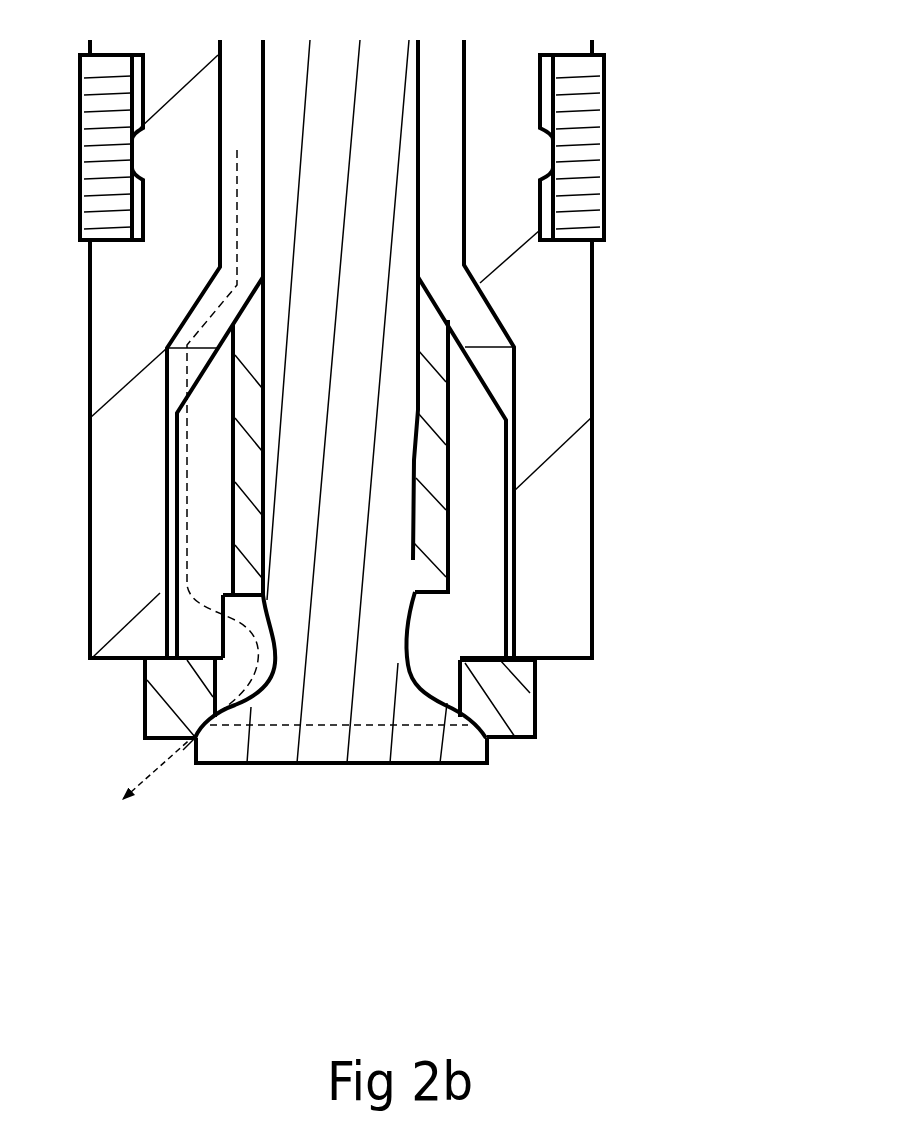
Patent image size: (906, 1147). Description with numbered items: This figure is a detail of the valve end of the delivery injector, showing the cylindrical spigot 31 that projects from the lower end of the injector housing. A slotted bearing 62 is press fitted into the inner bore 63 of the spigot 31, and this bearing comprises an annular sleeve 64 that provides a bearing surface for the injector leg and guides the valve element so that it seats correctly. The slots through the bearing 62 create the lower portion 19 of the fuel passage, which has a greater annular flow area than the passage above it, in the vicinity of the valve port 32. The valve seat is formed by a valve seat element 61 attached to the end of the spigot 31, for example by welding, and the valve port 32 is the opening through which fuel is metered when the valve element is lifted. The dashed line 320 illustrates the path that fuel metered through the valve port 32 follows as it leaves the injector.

The cylindrical spigot 31 is at (125, 440).
The annular sleeve 64 is at (432, 432).
The slotted bearing 62 is at (478, 489).
The inner bore 63 is at (520, 540).
The lower portion of fuel passage 19 is at (480, 568).
The valve seat element 61 is at (509, 701).
The valve port 32 is at (493, 775).
The fuel path 320 is at (158, 785).